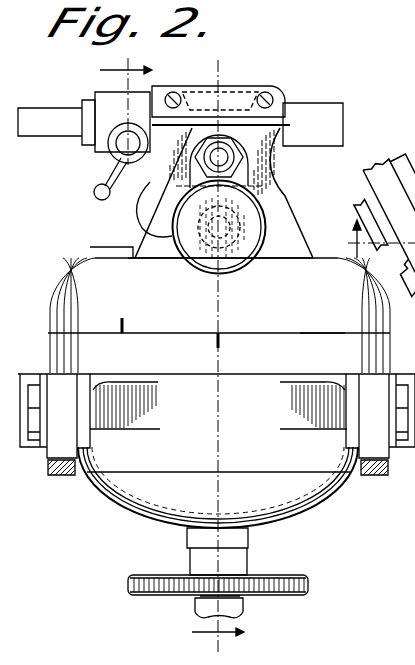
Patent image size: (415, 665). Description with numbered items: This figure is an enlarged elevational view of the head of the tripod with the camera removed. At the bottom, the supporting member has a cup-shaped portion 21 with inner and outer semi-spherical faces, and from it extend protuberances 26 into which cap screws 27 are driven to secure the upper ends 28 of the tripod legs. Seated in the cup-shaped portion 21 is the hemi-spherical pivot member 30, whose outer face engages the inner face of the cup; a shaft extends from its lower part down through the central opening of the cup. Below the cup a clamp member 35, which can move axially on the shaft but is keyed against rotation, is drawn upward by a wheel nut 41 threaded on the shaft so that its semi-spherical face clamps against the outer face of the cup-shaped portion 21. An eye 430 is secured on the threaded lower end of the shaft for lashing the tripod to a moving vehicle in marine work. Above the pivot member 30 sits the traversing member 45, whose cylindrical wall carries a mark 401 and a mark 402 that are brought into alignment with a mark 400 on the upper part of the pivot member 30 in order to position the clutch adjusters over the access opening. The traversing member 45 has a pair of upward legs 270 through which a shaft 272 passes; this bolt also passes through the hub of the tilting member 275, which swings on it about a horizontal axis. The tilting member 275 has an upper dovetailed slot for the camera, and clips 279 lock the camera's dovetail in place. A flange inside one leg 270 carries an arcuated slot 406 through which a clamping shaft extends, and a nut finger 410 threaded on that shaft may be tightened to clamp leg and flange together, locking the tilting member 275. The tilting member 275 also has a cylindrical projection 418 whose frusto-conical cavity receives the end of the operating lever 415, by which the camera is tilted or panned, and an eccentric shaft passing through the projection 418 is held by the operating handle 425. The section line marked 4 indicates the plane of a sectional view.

The section line 4- 4 is at (257, 352).
The operating lever 415 is at (37, 108).
The cylindrical projection 418 is at (108, 132).
The operating handle 425 is at (112, 167).
The tilting member 275 is at (200, 95).
The clips 279 is at (210, 98).
The shaft 272 is at (228, 158).
The arcuated slot 406 is at (290, 187).
The legs 270 is at (185, 182).
The nut finger 410 is at (186, 238).
The traversing member 45 is at (88, 291).
The mark 401 is at (119, 325).
The pivot member 30 is at (50, 352).
The mark 402 is at (308, 333).
The mark 400 is at (222, 342).
The cap screws 27 is at (35, 425).
The upper ends 28 is at (60, 444).
The protuberances 26 is at (128, 421).
The cup-shaped portion 21 is at (125, 453).
The clamp member 35 is at (287, 500).
The wheel nut 41 is at (309, 586).
The eye 430 is at (242, 608).